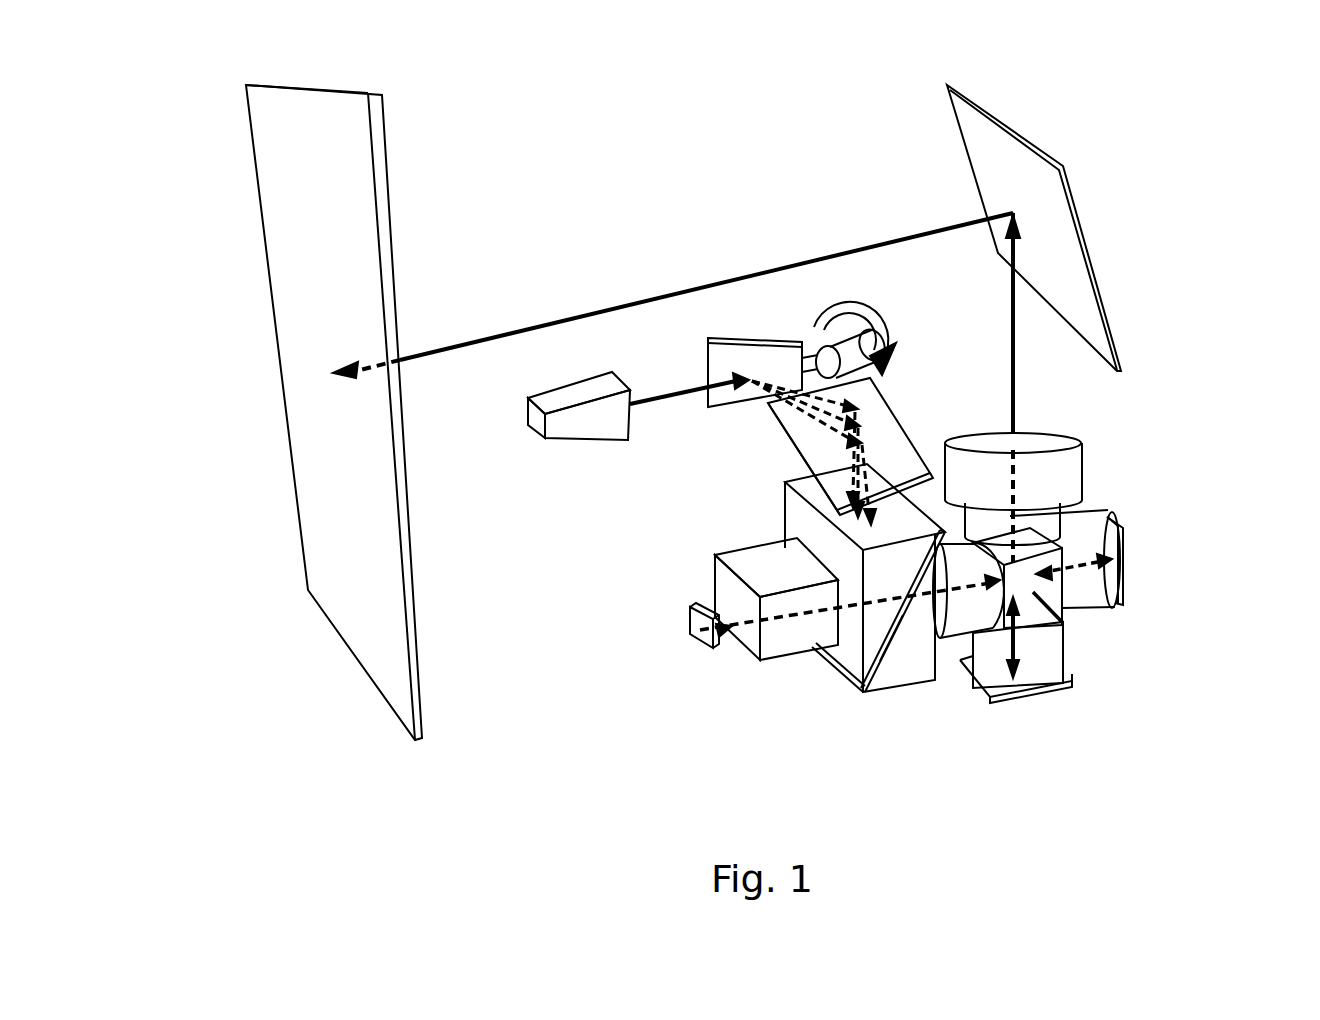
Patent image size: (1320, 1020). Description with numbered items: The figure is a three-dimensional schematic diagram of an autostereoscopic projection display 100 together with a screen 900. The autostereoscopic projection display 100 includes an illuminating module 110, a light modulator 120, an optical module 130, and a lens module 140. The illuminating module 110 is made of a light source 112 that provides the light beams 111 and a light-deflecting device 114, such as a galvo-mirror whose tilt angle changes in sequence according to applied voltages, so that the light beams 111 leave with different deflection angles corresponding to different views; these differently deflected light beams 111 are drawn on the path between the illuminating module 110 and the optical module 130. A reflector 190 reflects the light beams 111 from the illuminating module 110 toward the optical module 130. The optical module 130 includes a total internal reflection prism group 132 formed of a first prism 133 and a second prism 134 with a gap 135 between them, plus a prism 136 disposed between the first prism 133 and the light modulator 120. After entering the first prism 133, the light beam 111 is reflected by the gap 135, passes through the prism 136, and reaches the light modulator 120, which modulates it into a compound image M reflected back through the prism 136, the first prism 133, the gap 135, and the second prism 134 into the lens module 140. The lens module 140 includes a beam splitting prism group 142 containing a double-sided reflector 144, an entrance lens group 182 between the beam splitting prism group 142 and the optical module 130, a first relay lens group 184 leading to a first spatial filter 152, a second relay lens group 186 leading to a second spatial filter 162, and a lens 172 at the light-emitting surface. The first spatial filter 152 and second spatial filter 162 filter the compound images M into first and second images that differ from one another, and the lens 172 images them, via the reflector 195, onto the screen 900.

The autostereoscopic projection display 100 is at (757, 128).
The screen 900 is at (281, 297).
The reflector 195 is at (975, 123).
The illuminating module 110 is at (712, 421).
The light beams 111 is at (667, 391).
The light source 112 is at (588, 430).
The light-deflecting device 114 is at (795, 398).
The reflector 190 is at (880, 410).
The optical module 130 is at (846, 660).
The total internal reflection prism group 132 is at (874, 633).
The first prism 133 is at (872, 648).
The second prism 134 is at (930, 670).
The gap 135 is at (900, 636).
The prism 136 is at (792, 640).
The light modulator 120 is at (690, 620).
The compound images M is at (723, 640).
The lens module 140 is at (1115, 575).
The lens 172 is at (1068, 470).
The entrance lens group 182 is at (1090, 513).
The second spatial filter 162 is at (1122, 543).
The second relay lens group 186 is at (1097, 583).
The double-sided reflector 144 is at (1065, 620).
The beam splitting prism group 142 is at (1040, 600).
The first relay lens group 184 is at (1053, 668).
The first spatial filter 152 is at (1090, 685).